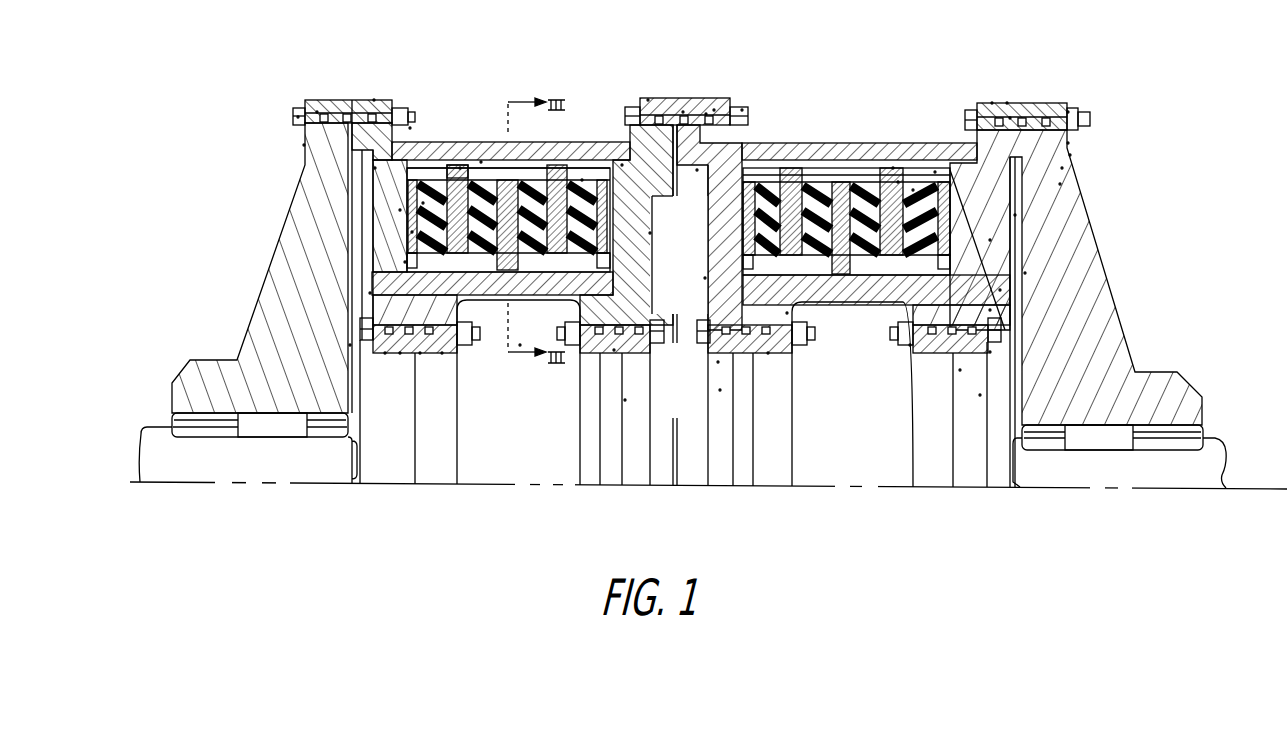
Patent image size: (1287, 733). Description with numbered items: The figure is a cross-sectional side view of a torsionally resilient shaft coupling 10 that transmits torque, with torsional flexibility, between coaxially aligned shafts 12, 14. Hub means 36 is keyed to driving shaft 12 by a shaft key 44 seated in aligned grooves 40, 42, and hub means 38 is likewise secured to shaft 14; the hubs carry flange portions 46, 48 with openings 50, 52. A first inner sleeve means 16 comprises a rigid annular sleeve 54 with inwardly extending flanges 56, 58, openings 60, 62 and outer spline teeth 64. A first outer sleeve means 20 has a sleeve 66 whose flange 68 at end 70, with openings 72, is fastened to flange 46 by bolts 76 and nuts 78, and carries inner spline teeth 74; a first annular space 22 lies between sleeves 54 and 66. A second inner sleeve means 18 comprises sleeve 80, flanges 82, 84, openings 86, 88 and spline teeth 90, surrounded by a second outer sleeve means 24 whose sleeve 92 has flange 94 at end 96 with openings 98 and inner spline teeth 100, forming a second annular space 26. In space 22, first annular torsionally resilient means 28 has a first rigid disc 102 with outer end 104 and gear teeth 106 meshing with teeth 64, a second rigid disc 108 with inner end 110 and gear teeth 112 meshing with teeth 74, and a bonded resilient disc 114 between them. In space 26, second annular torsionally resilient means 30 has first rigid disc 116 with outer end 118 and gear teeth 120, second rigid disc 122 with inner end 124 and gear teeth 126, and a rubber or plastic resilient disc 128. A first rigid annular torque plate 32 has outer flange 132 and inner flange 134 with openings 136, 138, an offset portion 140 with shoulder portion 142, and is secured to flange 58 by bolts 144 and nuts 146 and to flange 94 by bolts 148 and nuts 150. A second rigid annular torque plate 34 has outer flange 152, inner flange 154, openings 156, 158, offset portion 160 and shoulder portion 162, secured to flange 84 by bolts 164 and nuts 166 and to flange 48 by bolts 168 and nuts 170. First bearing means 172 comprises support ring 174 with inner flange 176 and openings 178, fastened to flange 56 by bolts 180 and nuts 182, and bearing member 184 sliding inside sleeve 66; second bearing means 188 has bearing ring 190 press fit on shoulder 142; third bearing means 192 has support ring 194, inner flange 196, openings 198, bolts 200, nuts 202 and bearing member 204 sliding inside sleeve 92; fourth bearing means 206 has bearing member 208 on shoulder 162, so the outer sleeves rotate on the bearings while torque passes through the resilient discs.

The torsionally resilient shaft coupling 10 is at (927, 42).
The first shaft 12 is at (213, 470).
The second shaft 14 is at (1085, 476).
The first inner sleeve means 16 is at (380, 315).
The second inner sleeve means 18 is at (1025, 330).
The first outer sleeve means 20 is at (432, 142).
The first annular space 22 is at (580, 180).
The second outer sleeve means 24 is at (796, 143).
The second annular space 26 is at (850, 182).
The first annular torsionally resilient means 28 is at (360, 226).
The second annular torsionally resilient means 30 is at (1072, 198).
The first rigid annular torque plate 32 is at (663, 100).
The second rigid annular torque plate 34 is at (1007, 103).
The hub means 36 is at (303, 145).
The hub means 38 is at (1070, 155).
The axially extending groove 40 is at (183, 420).
The axially extending groove 42 is at (208, 437).
The shaft key 44 is at (278, 437).
The flange portion 46 is at (350, 100).
The flange portion 48 is at (1045, 103).
The openings 50 is at (317, 112).
The openings 52 is at (1068, 112).
The rigid annular sleeve 54 is at (500, 300).
The inwardly extending flange 56 is at (420, 353).
The inwardly extending flange 58 is at (610, 355).
The openings 60 is at (440, 315).
The openings 62 is at (578, 322).
The spline teeth 64 is at (420, 285).
The sleeve 66 is at (481, 162).
The outwardly extending flange 68 is at (374, 99).
The one end 70 is at (410, 128).
The openings 72 is at (351, 100).
The spline teeth 74 is at (497, 168).
The bolts 76 is at (298, 117).
The nuts 78 is at (398, 108).
The sleeve 80 is at (858, 302).
The inwardly extending flange 82 is at (768, 353).
The inwardly extending flange 84 is at (923, 360).
The openings 86 is at (787, 313).
The openings 88 is at (920, 320).
The spline teeth 90 is at (1000, 290).
The sleeve 92 is at (898, 182).
The outwardly extending flange 94 is at (714, 110).
The one end 96 is at (736, 128).
The openings 98 is at (706, 114).
The spline teeth 100 is at (822, 168).
The first rigid disc 102 is at (423, 203).
The outer end 104 is at (375, 168).
The gear teeth 106 is at (405, 262).
The second rigid disc 108 is at (460, 168).
The inner end 110 is at (412, 232).
The gear teeth 112 is at (448, 167).
The resilient disc 114 is at (400, 210).
The first rigid disc 116 is at (1015, 215).
The outer end 118 is at (935, 172).
The gear teeth 120 is at (990, 310).
The second rigid disc 122 is at (990, 240).
The inner end 124 is at (1025, 273).
The gear teeth 126 is at (893, 168).
The resilient disc 128 is at (913, 190).
The outer flange 132 is at (648, 100).
The inner flange 134 is at (625, 400).
The openings 136 is at (683, 112).
The openings 138 is at (614, 350).
The offset portion 140 is at (648, 280).
The shoulder portion 142 is at (650, 233).
The bolts 144 is at (657, 317).
The nuts 146 is at (520, 345).
The bolts 148 is at (742, 110).
The nuts 150 is at (630, 106).
The outer flange 152 is at (992, 103).
The inner flange 154 is at (980, 395).
The openings 156 is at (1010, 118).
The openings 158 is at (960, 370).
The offset portion 160 is at (990, 352).
The shoulder portion 162 is at (1060, 184).
The bolts 164 is at (985, 415).
The nuts 166 is at (910, 345).
The bolts 168 is at (970, 112).
The nuts 170 is at (1090, 114).
The first bearing means 172 is at (358, 330).
The annular bearing support ring 174 is at (370, 293).
The inner flange 176 is at (400, 353).
The openings 178 is at (385, 353).
The bolts 180 is at (350, 345).
The nuts 182 is at (442, 353).
The annular bearing member 184 is at (300, 110).
The second bearing means 188 is at (622, 165).
The bearing ring 190 is at (582, 180).
The third bearing means 192 is at (705, 278).
The support ring 194 is at (710, 340).
The inner flange 196 is at (732, 353).
The openings 198 is at (720, 390).
The bolts 200 is at (718, 362).
The nuts 202 is at (797, 347).
The bearing member 204 is at (697, 170).
The fourth bearing means 206 is at (1062, 168).
The bearing member 208 is at (1068, 143).